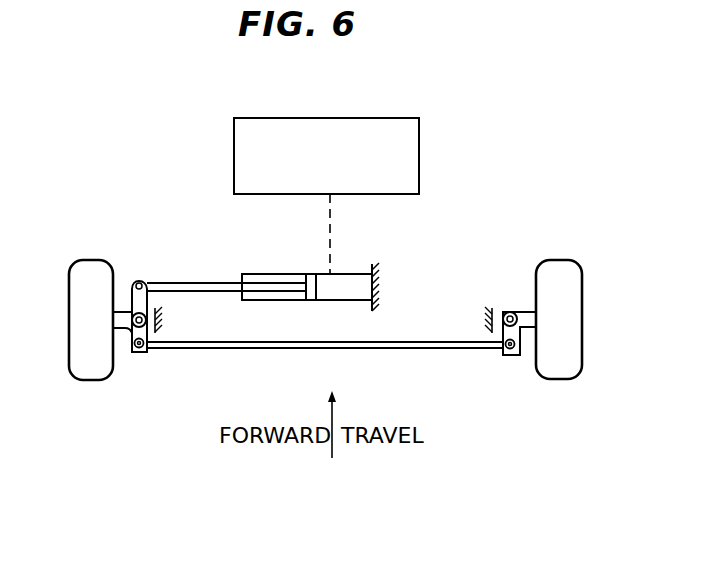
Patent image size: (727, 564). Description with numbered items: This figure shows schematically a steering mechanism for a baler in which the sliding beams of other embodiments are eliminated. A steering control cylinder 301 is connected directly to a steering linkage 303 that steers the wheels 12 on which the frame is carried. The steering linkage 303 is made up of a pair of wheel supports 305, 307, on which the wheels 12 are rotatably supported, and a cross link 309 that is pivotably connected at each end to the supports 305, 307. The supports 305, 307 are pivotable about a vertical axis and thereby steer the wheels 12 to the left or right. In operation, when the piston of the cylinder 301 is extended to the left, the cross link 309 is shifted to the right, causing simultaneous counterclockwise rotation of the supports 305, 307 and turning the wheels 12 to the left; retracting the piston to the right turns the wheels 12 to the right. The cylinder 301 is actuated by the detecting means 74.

The wheels 12 is at (88, 262).
The detecting means 74 is at (424, 143).
The steering control cylinder 301 is at (347, 274).
The steering linkage 303 is at (278, 358).
The wheel support 305 is at (140, 280).
The wheel support 307 is at (519, 311).
The cross link 309 is at (432, 351).